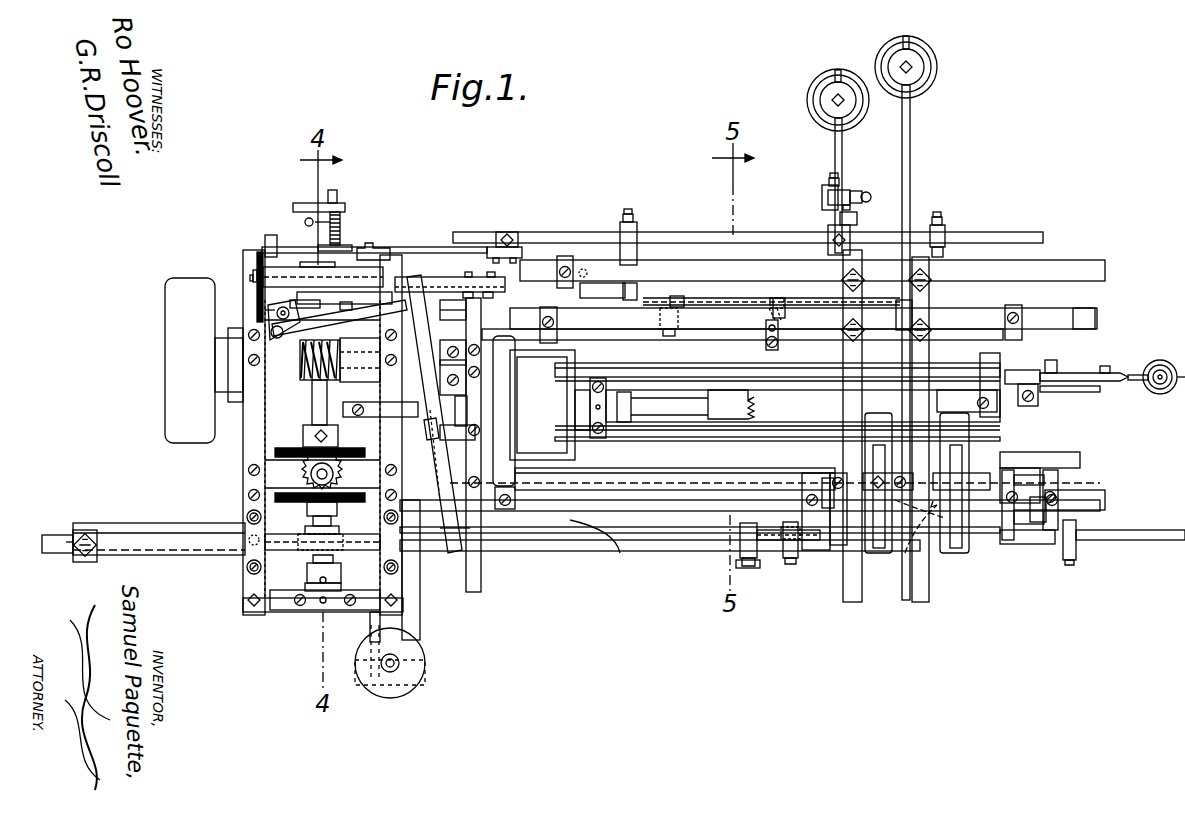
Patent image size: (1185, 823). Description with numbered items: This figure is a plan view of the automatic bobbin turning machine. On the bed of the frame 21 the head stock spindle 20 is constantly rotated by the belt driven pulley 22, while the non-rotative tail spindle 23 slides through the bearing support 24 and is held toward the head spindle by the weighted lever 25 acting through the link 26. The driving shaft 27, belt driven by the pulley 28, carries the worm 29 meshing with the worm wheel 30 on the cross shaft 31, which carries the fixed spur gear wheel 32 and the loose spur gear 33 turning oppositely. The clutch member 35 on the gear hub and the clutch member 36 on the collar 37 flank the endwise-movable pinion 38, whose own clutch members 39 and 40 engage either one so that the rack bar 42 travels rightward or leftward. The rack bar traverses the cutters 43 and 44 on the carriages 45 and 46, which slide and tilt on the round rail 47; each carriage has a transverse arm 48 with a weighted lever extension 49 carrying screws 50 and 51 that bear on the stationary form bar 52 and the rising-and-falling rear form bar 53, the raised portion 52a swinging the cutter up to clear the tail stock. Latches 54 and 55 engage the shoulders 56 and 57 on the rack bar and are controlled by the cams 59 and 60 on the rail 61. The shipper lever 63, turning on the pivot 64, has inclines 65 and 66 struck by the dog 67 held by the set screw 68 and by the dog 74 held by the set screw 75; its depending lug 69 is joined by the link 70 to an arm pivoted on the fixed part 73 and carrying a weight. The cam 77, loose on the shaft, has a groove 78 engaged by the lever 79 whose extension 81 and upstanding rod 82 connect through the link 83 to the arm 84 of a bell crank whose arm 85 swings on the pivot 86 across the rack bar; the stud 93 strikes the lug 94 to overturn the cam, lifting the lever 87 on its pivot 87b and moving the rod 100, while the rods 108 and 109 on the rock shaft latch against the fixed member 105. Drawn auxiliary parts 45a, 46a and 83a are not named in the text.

The head stock spindle 20 is at (777, 392).
The frame 21 is at (742, 347).
The belt driven pulley 22 is at (549, 422).
The tail spindle 23 is at (870, 402).
The bearing support 24 is at (967, 399).
The weighted lever 25 is at (1112, 369).
The link 26 is at (1080, 392).
The driving shaft 27 is at (302, 372).
The pulley 28 is at (204, 360).
The worm 29 is at (378, 395).
The worm wheel 30 is at (358, 352).
The shaft 31 is at (312, 408).
The spur gear wheel 32 is at (308, 434).
The spur gear 33 is at (338, 510).
The clutch member 35 is at (304, 492).
The clutch member 36 is at (307, 572).
The collar 37 is at (341, 583).
The pinion 38 is at (343, 540).
The clutch member 39 is at (313, 522).
The clutch member 40 is at (335, 562).
The rack bar 42 is at (664, 581).
The cutter 43 is at (953, 483).
The cutter 44 is at (878, 483).
The carriage 45 is at (990, 535).
The clamp 45a is at (1040, 512).
The carriage 46 is at (838, 546).
The clamp 46a is at (810, 478).
The round rail 47 is at (715, 505).
The transverse arm 48 is at (886, 407).
The weighted lever extension 49 is at (842, 168).
The screw 50 is at (845, 332).
The screw 51 is at (862, 282).
The form bar 52 is at (803, 325).
The raised portion 52a is at (889, 315).
The form bar 53 is at (812, 278).
The latch 54 is at (1025, 540).
The latch 55 is at (777, 545).
The shoulder 56 is at (1078, 545).
The shoulder 57 is at (790, 526).
The inclined plate or cam 59 is at (596, 547).
The inclined plate or cam 60 is at (918, 545).
The rail 61 is at (690, 485).
The shipper lever 63 is at (172, 530).
The pivot 64 is at (250, 538).
The incline or cam 65 is at (470, 528).
The incline or cam 66 is at (72, 530).
The dog 67 is at (82, 558).
The set screw 68 is at (72, 550).
The depending lug 69 is at (455, 556).
The link 70 is at (420, 626).
The fixed part of the frame 73 is at (370, 630).
The weight / dog 74 is at (422, 668).
The set screw 75 is at (745, 570).
The cam 77 is at (265, 255).
The groove 78 is at (312, 306).
The lever 79 is at (345, 302).
The extension 81 is at (265, 310).
The upstanding rod 82 is at (254, 280).
The link 83 is at (270, 330).
The lever 83a is at (445, 490).
The arm 84 is at (257, 280).
The arm 85 is at (412, 350).
The pivot 86 is at (457, 445).
The lever 87 is at (282, 262).
The pivot 87b is at (484, 275).
The stud 93 is at (372, 248).
The lug 94 is at (330, 232).
The rod 100 is at (706, 236).
The fixed horizontal member 105 is at (772, 298).
The upstanding rod 108 is at (865, 193).
The rod 109 is at (788, 300).